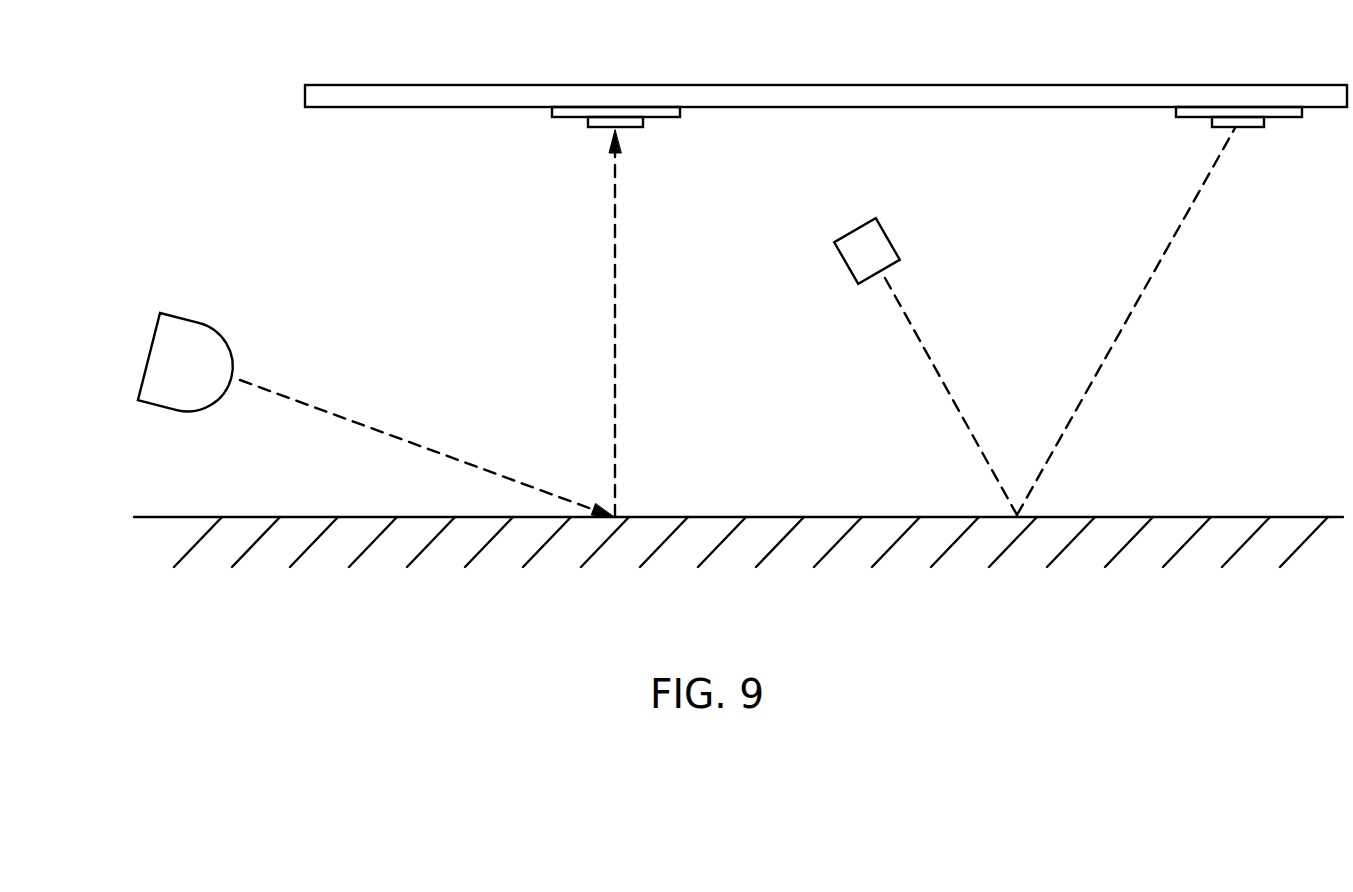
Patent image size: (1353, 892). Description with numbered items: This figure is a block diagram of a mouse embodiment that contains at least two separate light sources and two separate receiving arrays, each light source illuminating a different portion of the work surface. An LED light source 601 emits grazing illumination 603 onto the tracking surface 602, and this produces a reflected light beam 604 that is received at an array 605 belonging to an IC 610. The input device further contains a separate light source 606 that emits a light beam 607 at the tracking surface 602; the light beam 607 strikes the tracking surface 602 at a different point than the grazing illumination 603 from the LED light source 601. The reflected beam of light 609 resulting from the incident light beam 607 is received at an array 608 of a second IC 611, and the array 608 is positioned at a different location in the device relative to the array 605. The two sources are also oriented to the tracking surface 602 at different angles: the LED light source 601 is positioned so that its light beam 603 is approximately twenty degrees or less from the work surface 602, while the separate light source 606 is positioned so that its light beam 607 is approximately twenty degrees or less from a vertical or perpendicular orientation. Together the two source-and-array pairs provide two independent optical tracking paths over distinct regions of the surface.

The LED light source 601 is at (152, 320).
The tracking surface 602 is at (1238, 503).
The grazing illumination 603 is at (325, 417).
The reflected light beam 604 is at (620, 358).
The array 605 is at (588, 130).
The separate light source 606 is at (855, 227).
The light beam 607 is at (928, 380).
The array 608 is at (1255, 130).
The reflected beam of light 609 is at (1112, 380).
The IC 610 is at (552, 112).
The IC 611 is at (1178, 119).